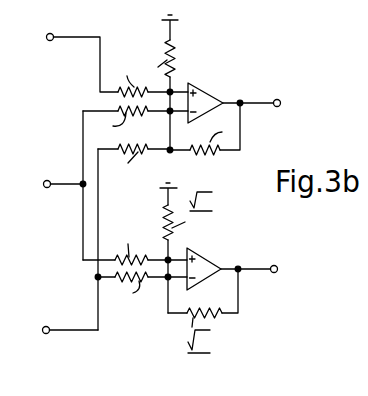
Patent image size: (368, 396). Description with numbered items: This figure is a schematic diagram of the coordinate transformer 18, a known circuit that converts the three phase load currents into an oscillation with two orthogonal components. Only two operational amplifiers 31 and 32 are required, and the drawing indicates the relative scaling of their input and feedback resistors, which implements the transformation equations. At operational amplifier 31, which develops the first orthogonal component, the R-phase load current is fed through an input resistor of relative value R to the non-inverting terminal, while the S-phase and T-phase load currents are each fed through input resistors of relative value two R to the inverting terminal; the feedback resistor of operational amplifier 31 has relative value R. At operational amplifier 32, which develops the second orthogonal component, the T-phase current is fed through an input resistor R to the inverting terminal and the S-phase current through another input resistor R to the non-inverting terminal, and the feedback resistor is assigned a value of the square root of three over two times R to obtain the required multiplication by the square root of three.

The coordinate transformer 18 is at (256, 43).
The operational amplifier 31 is at (207, 98).
The operational amplifier 32 is at (207, 263).